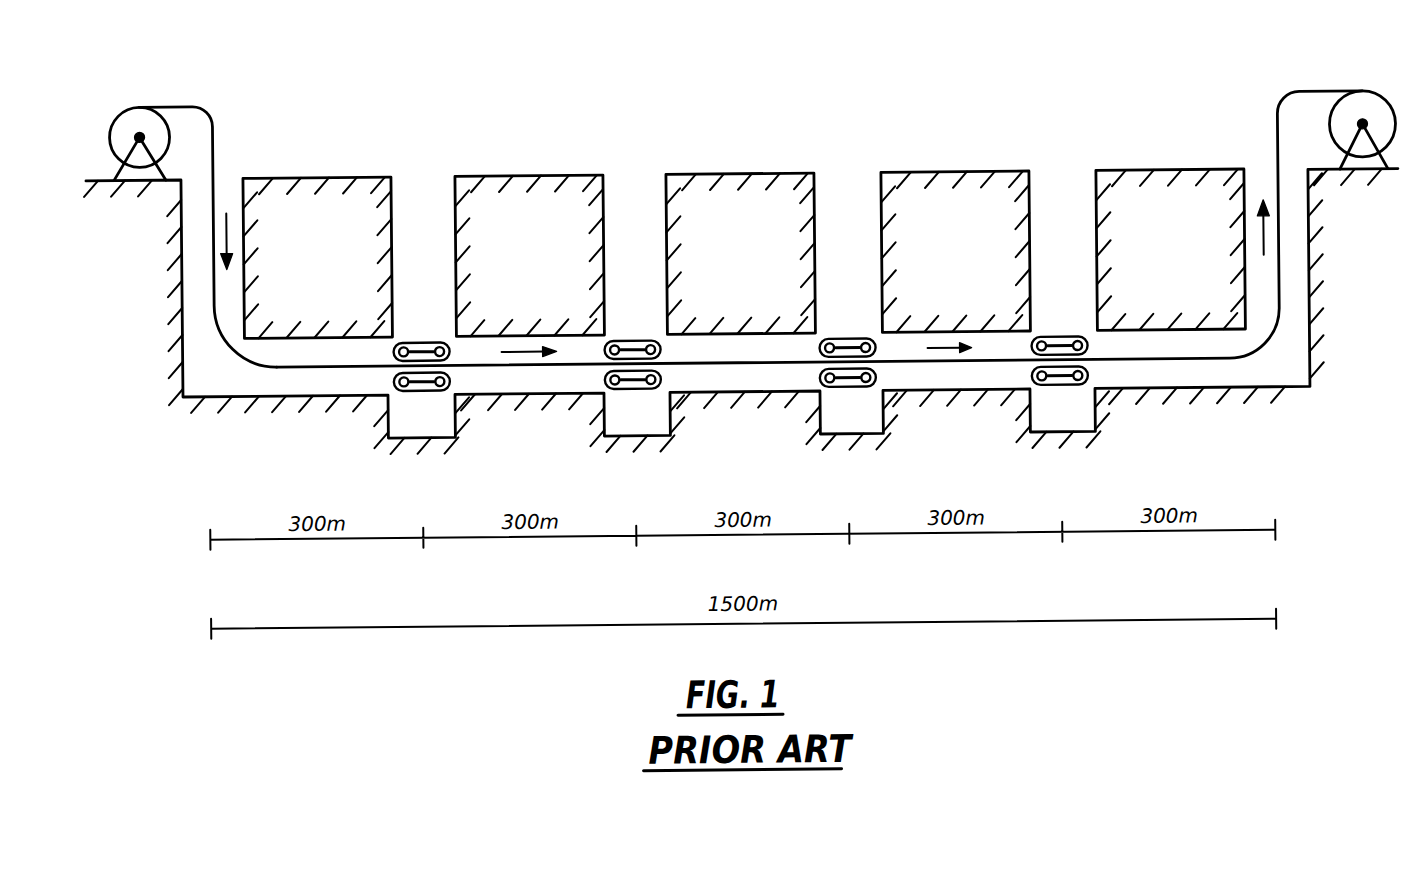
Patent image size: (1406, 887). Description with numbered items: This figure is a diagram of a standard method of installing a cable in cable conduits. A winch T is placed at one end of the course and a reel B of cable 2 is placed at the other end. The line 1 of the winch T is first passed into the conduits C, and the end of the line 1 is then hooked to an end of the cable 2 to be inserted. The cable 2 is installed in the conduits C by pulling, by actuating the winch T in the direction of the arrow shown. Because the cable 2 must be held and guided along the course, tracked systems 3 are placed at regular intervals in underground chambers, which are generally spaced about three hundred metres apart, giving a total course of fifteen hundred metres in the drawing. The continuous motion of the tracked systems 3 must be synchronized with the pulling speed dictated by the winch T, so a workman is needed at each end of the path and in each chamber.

The reel B is at (140, 118).
The winch T is at (1365, 112).
The line 1 is at (1280, 133).
The cable 2 is at (215, 130).
The tracked systems 3 is at (421, 345).
The conduits C is at (263, 388).